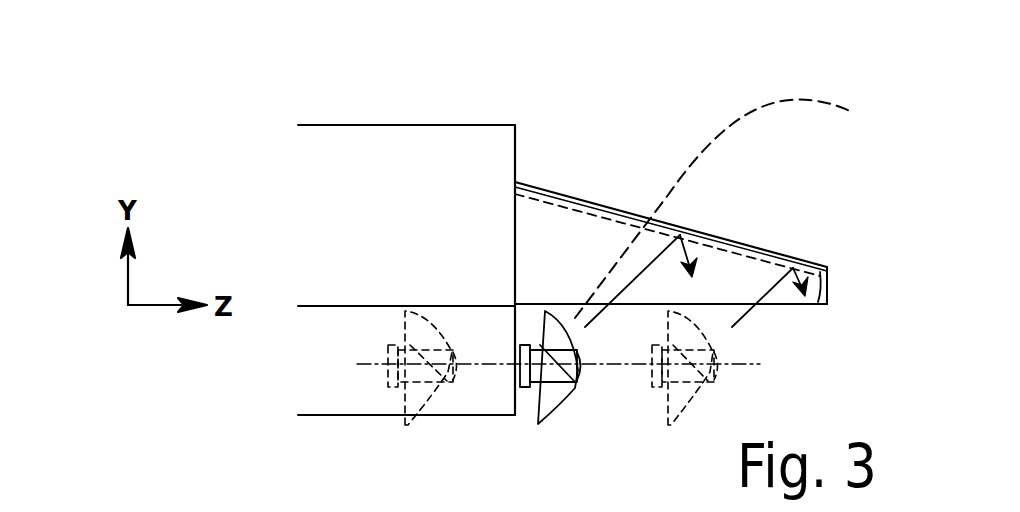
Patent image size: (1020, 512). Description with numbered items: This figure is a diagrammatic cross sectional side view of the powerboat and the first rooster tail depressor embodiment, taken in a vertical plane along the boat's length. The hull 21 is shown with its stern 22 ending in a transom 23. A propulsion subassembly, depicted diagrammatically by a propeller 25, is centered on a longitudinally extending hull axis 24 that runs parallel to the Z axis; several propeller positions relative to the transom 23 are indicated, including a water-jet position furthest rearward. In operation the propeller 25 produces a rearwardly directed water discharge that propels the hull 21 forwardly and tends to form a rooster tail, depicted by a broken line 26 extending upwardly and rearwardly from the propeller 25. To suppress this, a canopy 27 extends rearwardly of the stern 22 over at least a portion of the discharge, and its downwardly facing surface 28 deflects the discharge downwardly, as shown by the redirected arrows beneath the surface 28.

The hull 21 is at (392, 140).
The stern 22 is at (500, 132).
The transom 23 is at (516, 138).
The hull axis 24 is at (363, 367).
The propeller 25 is at (535, 420).
The broken line 26 is at (770, 100).
The canopy 27 is at (793, 268).
The downwardly facing surface 28 is at (818, 302).